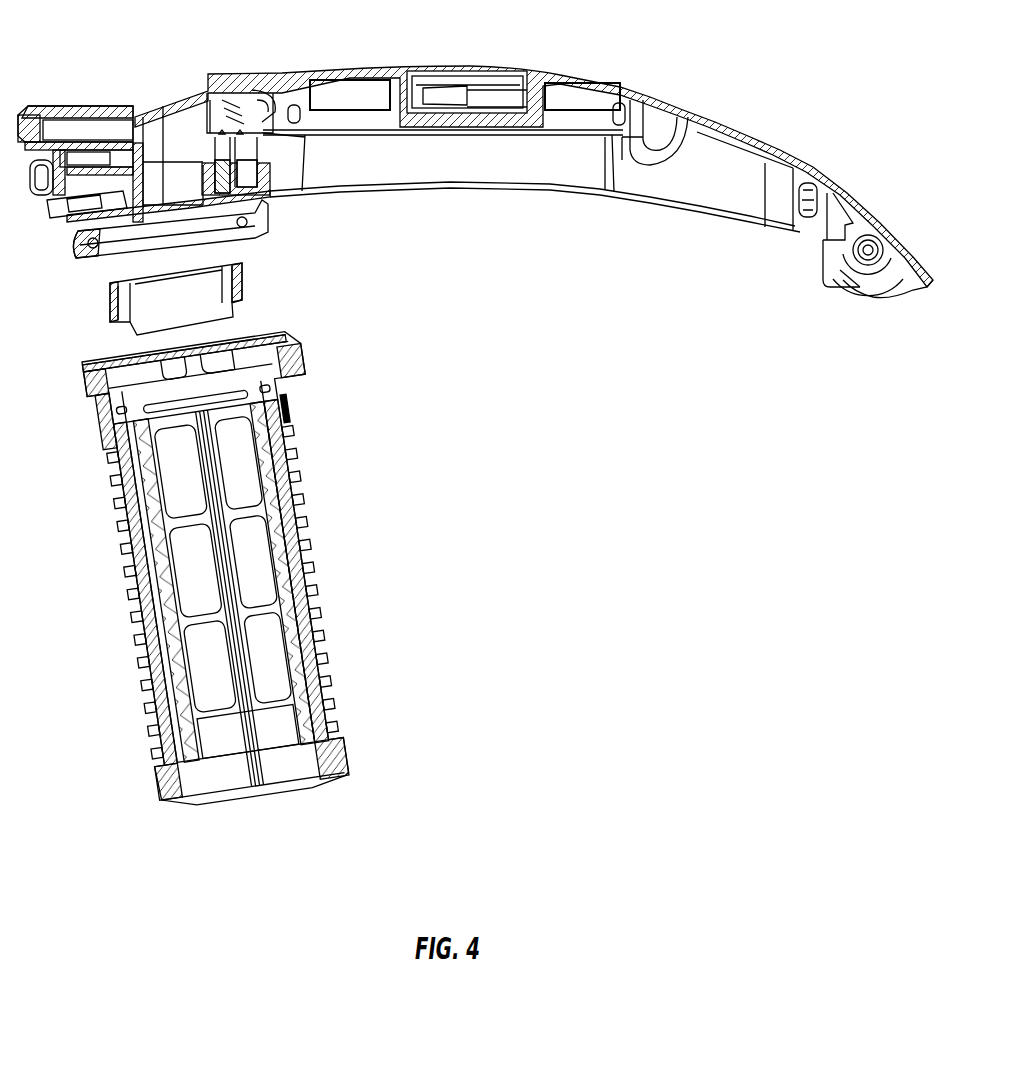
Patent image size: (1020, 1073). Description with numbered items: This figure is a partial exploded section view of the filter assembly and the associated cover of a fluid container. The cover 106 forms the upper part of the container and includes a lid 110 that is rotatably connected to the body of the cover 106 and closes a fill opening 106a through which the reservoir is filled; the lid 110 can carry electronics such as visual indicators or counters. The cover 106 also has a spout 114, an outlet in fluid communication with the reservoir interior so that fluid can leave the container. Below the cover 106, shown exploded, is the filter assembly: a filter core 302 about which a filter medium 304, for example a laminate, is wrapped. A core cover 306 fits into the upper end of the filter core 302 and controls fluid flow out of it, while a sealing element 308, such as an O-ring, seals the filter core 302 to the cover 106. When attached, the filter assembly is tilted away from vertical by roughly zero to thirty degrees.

The cover 106 is at (160, 100).
The fill opening 106a is at (600, 168).
The lid 110 is at (330, 68).
The spout 114 is at (71, 105).
The filter core 302 is at (227, 413).
The filter medium 304 is at (270, 586).
The core cover 306 is at (242, 282).
The sealing element 308 is at (244, 220).